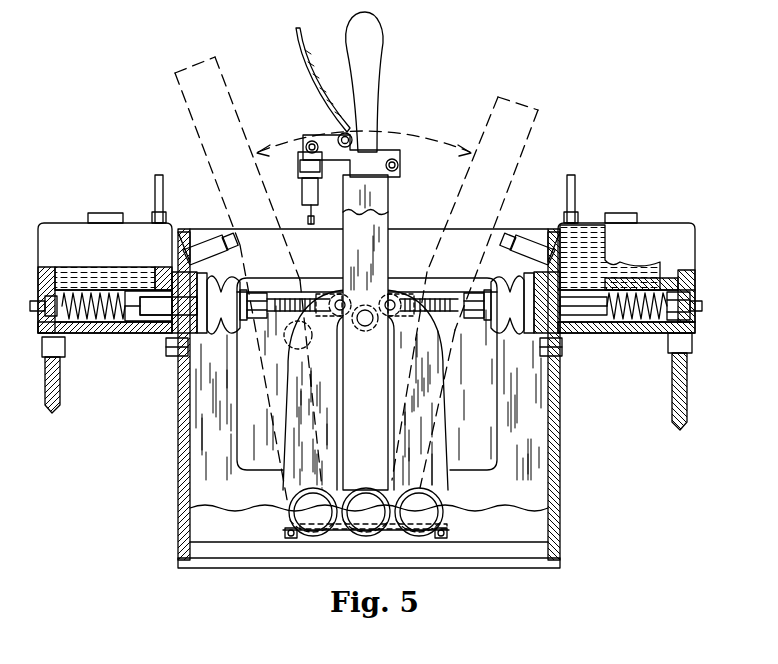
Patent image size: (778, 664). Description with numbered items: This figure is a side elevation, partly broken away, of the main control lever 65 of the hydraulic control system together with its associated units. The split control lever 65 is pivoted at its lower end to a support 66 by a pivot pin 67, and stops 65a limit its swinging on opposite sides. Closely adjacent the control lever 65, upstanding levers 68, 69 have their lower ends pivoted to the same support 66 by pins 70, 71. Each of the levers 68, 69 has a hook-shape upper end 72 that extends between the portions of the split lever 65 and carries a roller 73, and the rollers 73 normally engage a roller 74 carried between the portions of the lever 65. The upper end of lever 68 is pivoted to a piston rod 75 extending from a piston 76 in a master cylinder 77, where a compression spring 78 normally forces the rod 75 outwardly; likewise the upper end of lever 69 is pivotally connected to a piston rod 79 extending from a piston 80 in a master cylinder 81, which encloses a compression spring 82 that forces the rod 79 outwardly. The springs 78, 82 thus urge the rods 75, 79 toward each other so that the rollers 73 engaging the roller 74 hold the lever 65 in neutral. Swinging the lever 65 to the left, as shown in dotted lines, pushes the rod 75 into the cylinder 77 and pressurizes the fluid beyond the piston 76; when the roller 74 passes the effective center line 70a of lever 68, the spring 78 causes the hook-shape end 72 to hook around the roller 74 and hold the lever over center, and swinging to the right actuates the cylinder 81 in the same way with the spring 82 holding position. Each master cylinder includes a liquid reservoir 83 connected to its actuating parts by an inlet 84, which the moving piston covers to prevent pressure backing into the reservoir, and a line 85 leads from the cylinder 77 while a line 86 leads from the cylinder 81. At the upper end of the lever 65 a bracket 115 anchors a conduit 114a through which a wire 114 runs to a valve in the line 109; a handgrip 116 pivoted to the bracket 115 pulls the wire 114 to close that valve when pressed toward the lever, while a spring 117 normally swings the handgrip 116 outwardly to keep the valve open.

The main control lever 65 is at (388, 222).
The stops 65a is at (224, 246).
The support 66 is at (400, 535).
The pivot pin 67 is at (372, 518).
The upstanding lever 68 is at (302, 408).
The upstanding lever 69 is at (432, 412).
The pin 70 is at (300, 512).
The effective center line 70a is at (287, 343).
The pin 71 is at (427, 512).
The hook-shape upper end 72 is at (428, 300).
The roller 73 is at (338, 296).
The roller 74 is at (378, 318).
The piston rod 75 is at (280, 300).
The piston 76 is at (165, 296).
The master cylinder 77 is at (128, 326).
The compression spring 78 is at (78, 328).
The piston rod 79 is at (470, 292).
The piston 80 is at (580, 330).
The master cylinder 81 is at (625, 327).
The compression spring 82 is at (690, 296).
The liquid reservoir 83 is at (70, 240).
The inlet 84 is at (617, 280).
The line 85 is at (58, 396).
The line 86 is at (687, 402).
The line 109 is at (163, 193).
The wire 114 is at (311, 212).
The conduit 114a is at (300, 196).
The bracket 115 is at (396, 160).
The handgrip 116 is at (303, 58).
The spring 117 is at (350, 125).